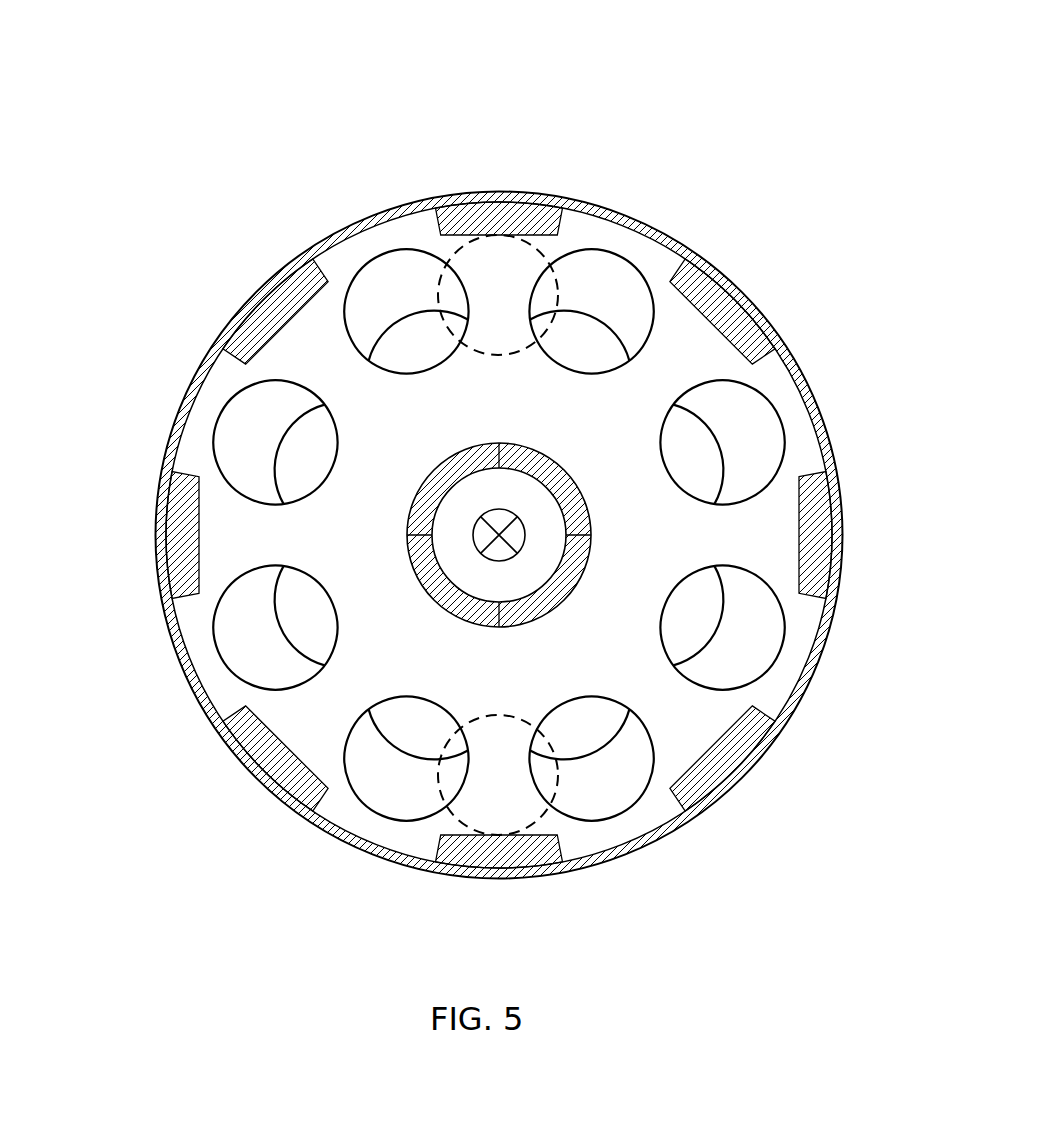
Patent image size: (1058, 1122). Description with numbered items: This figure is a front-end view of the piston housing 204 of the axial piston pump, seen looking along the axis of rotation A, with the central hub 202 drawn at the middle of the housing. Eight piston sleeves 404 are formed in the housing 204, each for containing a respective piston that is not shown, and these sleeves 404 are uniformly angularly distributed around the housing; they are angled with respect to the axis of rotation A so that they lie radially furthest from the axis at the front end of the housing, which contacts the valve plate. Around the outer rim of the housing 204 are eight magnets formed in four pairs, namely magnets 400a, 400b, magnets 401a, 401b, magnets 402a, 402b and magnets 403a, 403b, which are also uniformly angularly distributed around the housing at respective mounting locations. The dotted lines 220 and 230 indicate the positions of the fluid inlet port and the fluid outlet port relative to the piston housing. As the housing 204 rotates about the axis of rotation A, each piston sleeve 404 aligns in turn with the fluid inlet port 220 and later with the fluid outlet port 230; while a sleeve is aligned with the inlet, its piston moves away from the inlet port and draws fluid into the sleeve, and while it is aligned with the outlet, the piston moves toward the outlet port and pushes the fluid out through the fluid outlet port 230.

The piston housing 204 is at (578, 113).
The shaft hub 202 is at (468, 494).
The axis of rotation A is at (500, 535).
The fluid inlet port 220 is at (547, 812).
The fluid outlet port 230 is at (548, 258).
The magnet 400a is at (462, 213).
The magnet 400b is at (475, 858).
The magnet 401a is at (723, 308).
The magnet 401b is at (260, 773).
The magnet 402a is at (826, 542).
The magnet 402b is at (182, 522).
The magnet 403a is at (748, 765).
The magnet 403b is at (275, 307).
The piston sleeve 404 is at (402, 312).